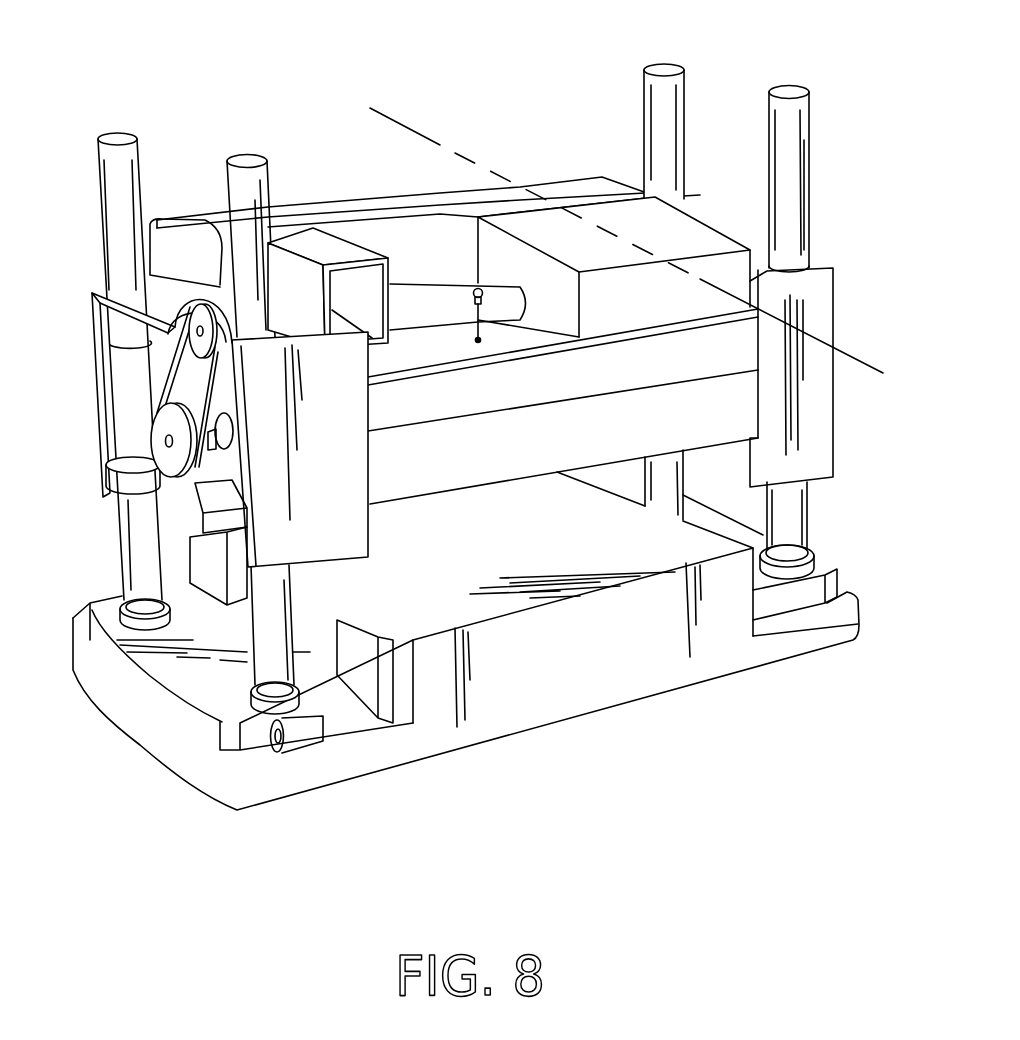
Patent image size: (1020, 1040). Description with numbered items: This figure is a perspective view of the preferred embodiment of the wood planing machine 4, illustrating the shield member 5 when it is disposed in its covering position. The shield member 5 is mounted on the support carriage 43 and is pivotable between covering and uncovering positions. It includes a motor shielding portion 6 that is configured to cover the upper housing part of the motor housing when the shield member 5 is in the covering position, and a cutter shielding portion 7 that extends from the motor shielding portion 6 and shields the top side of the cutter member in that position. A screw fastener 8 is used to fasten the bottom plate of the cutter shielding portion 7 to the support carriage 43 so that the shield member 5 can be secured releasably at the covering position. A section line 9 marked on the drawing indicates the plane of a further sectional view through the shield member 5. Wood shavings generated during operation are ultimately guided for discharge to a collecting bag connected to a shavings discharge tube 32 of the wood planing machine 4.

The wood planing machine 4 is at (668, 722).
The shield member 5 is at (533, 152).
The motor shielding portion 6 is at (583, 162).
The cutter shielding portion 7 is at (440, 352).
The screw fastener 8 is at (501, 314).
The section line 9- 9 is at (370, 108).
The shavings discharge tube 32 is at (600, 579).
The support carriage 43 is at (533, 445).